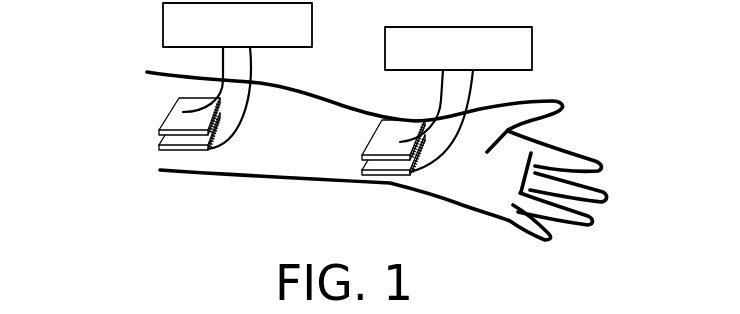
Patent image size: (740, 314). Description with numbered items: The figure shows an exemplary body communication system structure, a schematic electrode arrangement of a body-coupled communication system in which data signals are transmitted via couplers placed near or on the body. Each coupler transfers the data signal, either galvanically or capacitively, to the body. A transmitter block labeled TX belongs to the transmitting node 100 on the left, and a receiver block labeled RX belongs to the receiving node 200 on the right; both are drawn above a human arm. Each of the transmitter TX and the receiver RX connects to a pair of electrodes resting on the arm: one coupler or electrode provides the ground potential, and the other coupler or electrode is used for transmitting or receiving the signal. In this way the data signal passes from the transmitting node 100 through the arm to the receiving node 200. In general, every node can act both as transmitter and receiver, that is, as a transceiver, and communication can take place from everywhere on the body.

The transmitter 100 is at (185, 76).
The receiver 200 is at (496, 101).
The transmitter TX is at (237, 25).
The receiver RX is at (458, 48).